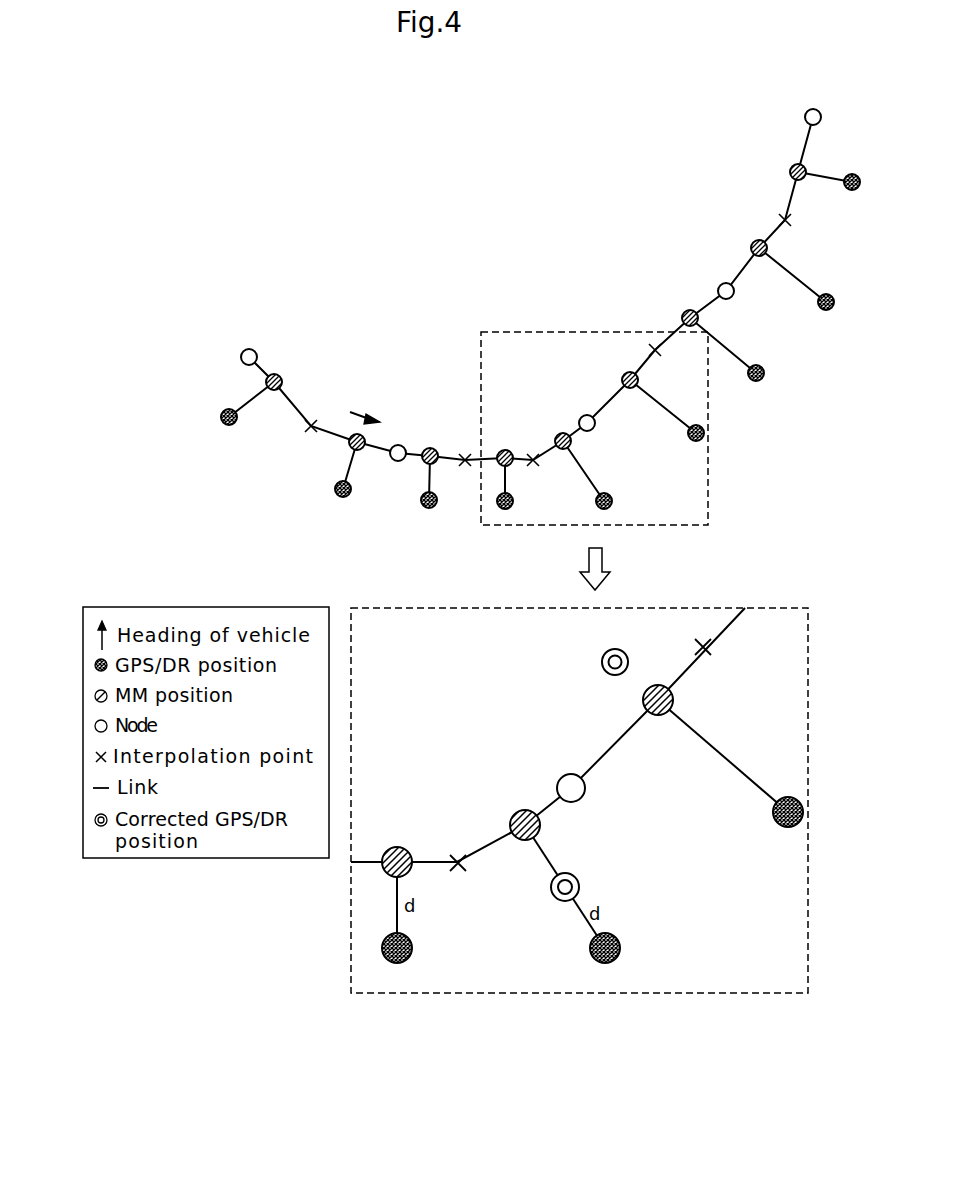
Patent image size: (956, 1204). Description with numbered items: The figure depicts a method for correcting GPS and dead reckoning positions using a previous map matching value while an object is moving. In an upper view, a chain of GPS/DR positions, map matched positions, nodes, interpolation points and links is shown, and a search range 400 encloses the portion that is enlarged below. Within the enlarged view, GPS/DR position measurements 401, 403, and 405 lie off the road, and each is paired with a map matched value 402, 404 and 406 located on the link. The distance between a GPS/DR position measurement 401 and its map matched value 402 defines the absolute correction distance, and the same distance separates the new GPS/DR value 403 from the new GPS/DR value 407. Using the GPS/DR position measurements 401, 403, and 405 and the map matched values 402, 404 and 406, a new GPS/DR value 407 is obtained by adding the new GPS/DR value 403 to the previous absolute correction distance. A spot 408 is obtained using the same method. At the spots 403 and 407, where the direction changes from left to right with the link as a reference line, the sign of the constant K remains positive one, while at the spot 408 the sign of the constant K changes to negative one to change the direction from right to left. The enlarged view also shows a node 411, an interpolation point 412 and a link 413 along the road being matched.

The search range 400 is at (708, 465).
The GPS/DR position measurement 401 is at (383, 947).
The map matched value 402 is at (397, 847).
The GPS/DR position measurement 403 is at (617, 960).
The map matched value 404 is at (525, 810).
The GPS/DR position measurement 405 is at (780, 830).
The map matched value 406 is at (673, 697).
The new GPS/DR value 407 is at (580, 885).
The spot 408 is at (625, 643).
The node 411 is at (571, 774).
The interpolation point 412 is at (458, 870).
The link 413 is at (615, 745).